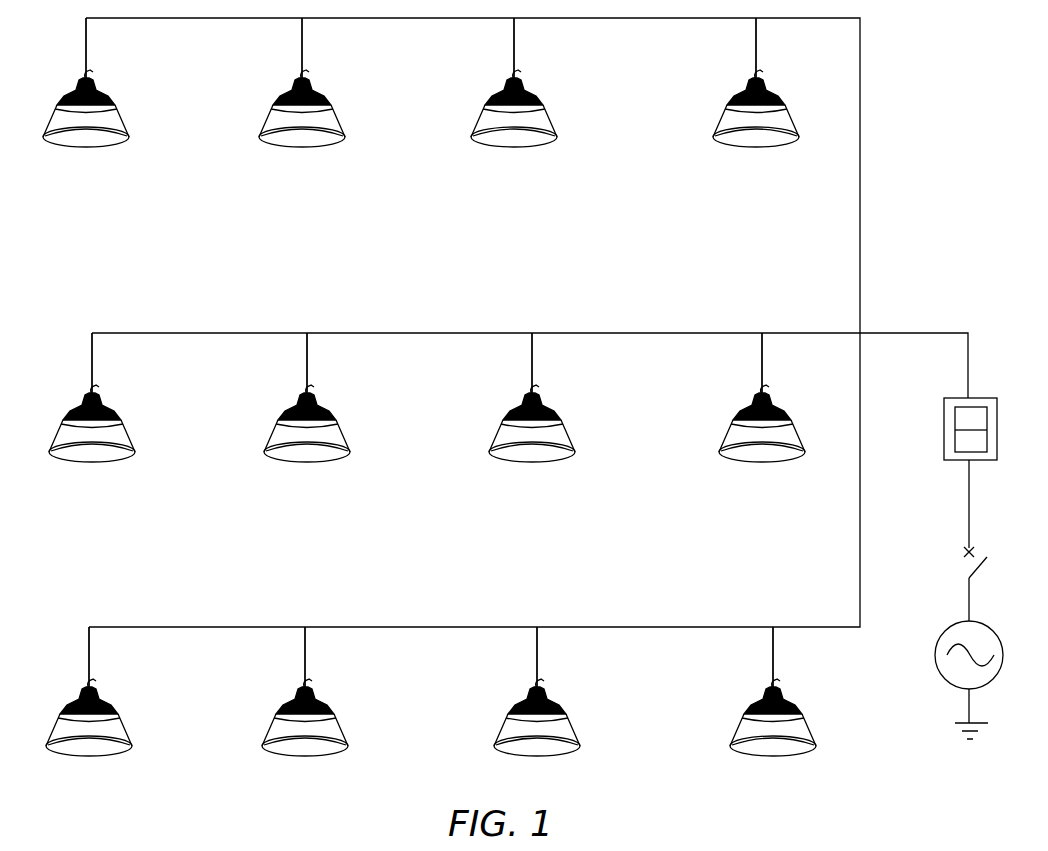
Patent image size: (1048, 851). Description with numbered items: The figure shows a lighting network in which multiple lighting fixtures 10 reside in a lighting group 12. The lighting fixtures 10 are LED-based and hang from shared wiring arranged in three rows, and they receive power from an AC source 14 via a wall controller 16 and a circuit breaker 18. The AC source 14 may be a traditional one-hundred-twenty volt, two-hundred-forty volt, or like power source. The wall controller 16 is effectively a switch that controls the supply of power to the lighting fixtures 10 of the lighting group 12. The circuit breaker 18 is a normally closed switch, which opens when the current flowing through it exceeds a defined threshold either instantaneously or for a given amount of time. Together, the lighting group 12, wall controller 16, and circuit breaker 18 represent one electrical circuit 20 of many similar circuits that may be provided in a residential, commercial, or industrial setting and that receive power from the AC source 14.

The lighting fixture 10 is at (429, 404).
The lighting group 12 is at (468, 278).
The AC source 14 is at (1000, 631).
The wall controller 16 is at (980, 398).
The circuit breaker 18 is at (982, 568).
The electrical circuit 20 is at (900, 332).